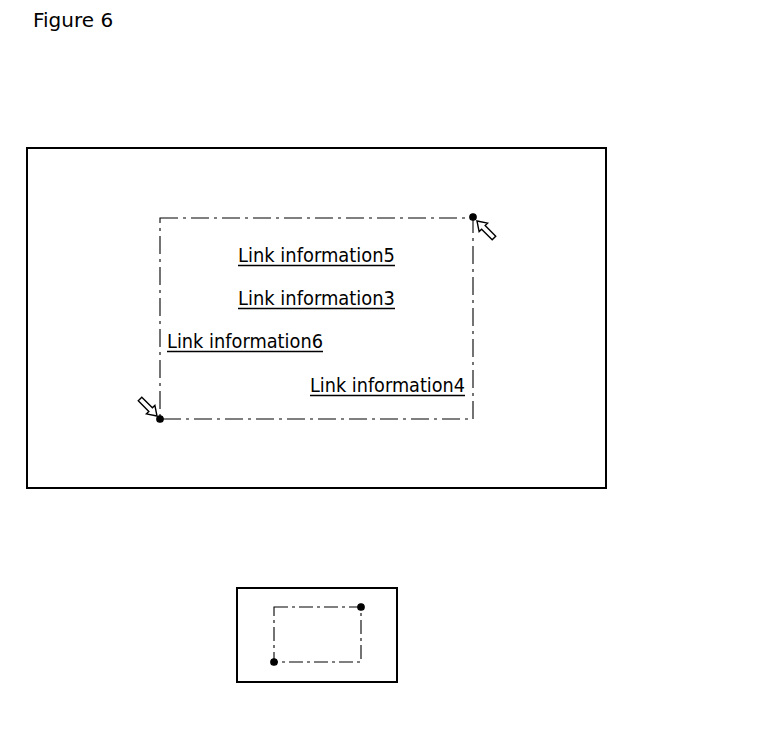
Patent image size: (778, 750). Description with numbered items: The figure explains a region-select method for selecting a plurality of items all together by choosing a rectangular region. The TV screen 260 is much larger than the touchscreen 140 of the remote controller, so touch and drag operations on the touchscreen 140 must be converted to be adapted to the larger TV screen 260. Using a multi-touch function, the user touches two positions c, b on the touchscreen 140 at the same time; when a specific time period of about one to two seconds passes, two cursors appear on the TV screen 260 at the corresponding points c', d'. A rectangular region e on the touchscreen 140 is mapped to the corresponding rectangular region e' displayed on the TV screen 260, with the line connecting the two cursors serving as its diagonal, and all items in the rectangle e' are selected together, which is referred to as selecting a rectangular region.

The TV screen 260 is at (606, 165).
The touchscreen 140 is at (397, 633).
The point e' on display corresponding to touch point e e' is at (211, 154).
The point d' on display corresponding to touch point b d' is at (470, 166).
The point c' on display corresponding to touch point c c' is at (162, 472).
The rectangular region e is at (295, 575).
The touch point b on touch pad b is at (361, 607).
The touch position c is at (266, 692).